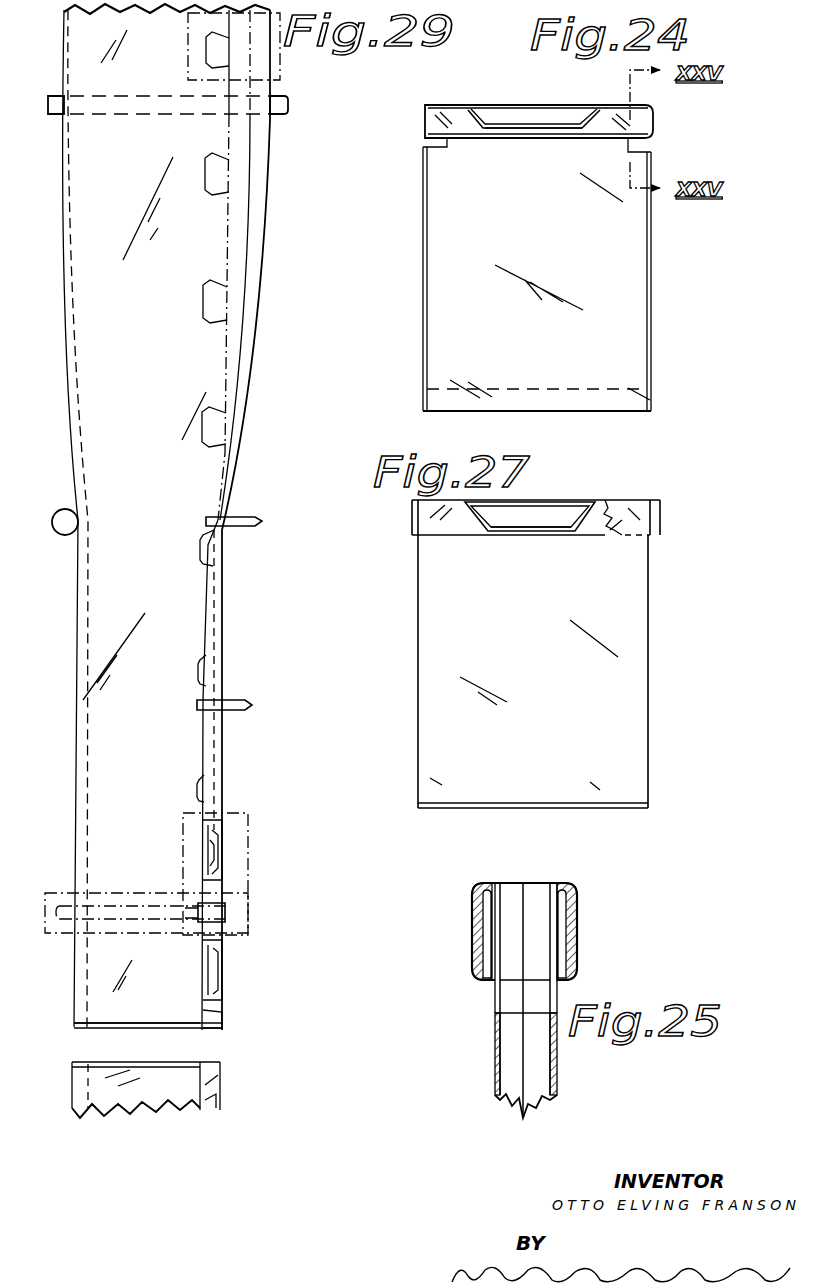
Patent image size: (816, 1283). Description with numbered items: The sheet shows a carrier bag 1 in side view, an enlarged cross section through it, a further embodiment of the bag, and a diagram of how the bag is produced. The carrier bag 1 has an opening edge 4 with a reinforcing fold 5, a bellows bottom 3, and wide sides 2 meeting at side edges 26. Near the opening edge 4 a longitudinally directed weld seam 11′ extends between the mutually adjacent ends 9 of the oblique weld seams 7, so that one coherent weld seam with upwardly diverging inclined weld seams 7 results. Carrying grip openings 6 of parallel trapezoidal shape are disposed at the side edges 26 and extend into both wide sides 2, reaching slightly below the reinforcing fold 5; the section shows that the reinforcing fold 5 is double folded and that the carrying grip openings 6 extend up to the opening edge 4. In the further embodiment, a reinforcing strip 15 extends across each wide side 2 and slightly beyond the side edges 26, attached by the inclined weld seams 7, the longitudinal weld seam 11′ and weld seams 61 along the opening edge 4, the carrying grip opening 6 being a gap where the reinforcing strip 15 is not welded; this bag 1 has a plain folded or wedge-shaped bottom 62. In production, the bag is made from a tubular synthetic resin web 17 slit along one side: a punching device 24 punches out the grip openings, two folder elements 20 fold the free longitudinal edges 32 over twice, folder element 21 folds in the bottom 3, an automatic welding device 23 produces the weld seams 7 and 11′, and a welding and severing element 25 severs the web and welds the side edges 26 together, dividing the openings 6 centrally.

In FIG. 29, the carrier bag 1 is at (226, 1068).
In FIG. 24, the carrier bag 1 is at (423, 270).
In FIG. 27, the carrier bag 1 is at (417, 682).
In FIG. 29, the wide sides 2 is at (158, 1080).
In FIG. 24, the wide sides 2 is at (436, 313).
In FIG. 27, the wide sides 2 is at (638, 646).
In FIG. 25, the wide sides 2 is at (496, 1052).
In FIG. 24, the bellows bottom 3 is at (648, 392).
In FIG. 24, the opening edge 4 is at (613, 106).
In FIG. 27, the opening edge 4 is at (608, 502).
In FIG. 25, the opening edge 4 is at (493, 884).
In FIG. 29, the reinforcing fold 5 is at (213, 753).
In FIG. 24, the reinforcing fold 5 is at (460, 121).
In FIG. 25, the reinforcing fold 5 is at (478, 926).
In FIG. 29, the carrying grip openings 6 is at (228, 70).
In FIG. 27, the carrying grip openings 6 is at (656, 505).
In FIG. 25, the carrying grip openings 6 is at (555, 915).
In FIG. 29, the oblique weld seams 7 is at (205, 823).
In FIG. 24, the oblique weld seams 7 is at (478, 116).
In FIG. 27, the oblique weld seams 7 is at (478, 521).
In FIG. 24, the mutually adjacent ends of the oblique weld seams 9 is at (490, 132).
In FIG. 29, the longitudinally directed weld seam 11′ is at (208, 858).
In FIG. 24, the longitudinally directed weld seam 11′ is at (546, 135).
In FIG. 27, the longitudinally directed weld seam 11′ is at (515, 534).
In FIG. 27, the reinforcing strip 15 is at (441, 518).
In FIG. 29, the tubular synthetic resin web 17 is at (90, 62).
In FIG. 29, the folder elements 20 is at (240, 530).
In FIG. 29, the folder element 21 is at (68, 518).
In FIG. 29, the automatic welding device 23 is at (250, 866).
In FIG. 29, the punching device 24 is at (284, 78).
In FIG. 29, the welding and severing element 25 is at (250, 914).
In FIG. 29, the side edges 26 is at (140, 910).
In FIG. 24, the side edges 26 is at (423, 205).
In FIG. 27, the side edges 26 is at (650, 702).
In FIG. 25, the side edges 26 is at (521, 1046).
In FIG. 29, the free longitudinal edges 32 is at (268, 150).
In FIG. 27, the weld seams along the opening edge 61 is at (576, 511).
In FIG. 27, the plain folded or wedge-shaped bottom 62 is at (602, 804).